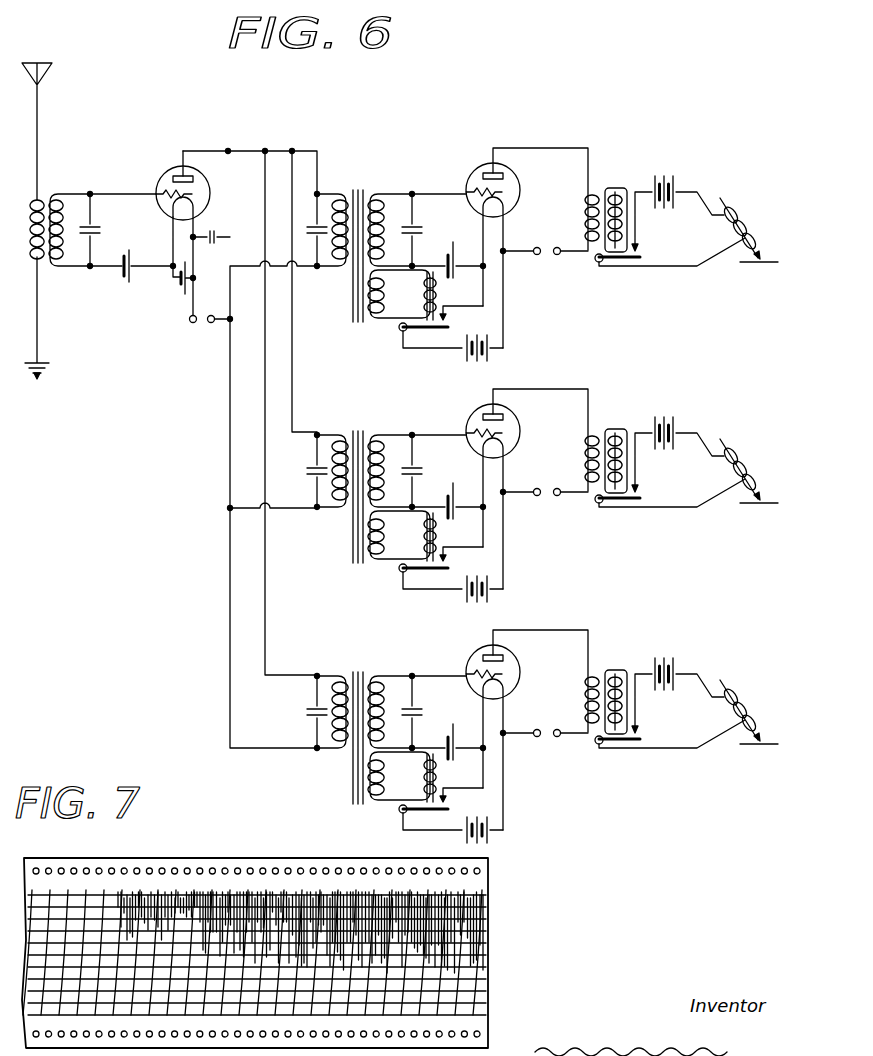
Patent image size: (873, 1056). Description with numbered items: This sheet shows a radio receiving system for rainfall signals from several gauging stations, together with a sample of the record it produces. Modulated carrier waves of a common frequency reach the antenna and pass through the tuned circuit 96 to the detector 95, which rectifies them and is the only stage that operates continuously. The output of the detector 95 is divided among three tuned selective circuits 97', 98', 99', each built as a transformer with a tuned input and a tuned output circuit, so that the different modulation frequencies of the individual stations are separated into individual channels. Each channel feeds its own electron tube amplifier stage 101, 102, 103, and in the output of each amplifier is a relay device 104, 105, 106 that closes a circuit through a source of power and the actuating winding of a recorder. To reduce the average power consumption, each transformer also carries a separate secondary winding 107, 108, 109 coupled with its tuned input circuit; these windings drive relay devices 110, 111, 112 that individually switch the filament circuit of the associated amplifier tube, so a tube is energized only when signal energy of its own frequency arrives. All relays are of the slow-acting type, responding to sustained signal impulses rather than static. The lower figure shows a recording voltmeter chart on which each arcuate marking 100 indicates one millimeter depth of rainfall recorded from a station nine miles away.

In FIG. 6, the detector circuit 95 is at (162, 168).
In FIG. 6, the tuned circuit 96 is at (77, 207).
In FIG. 6, the tuned selective circuit 97' is at (386, 244).
In FIG. 6, the tuned selective circuit 98' is at (386, 485).
In FIG. 6, the tuned selective circuit 99' is at (386, 726).
In FIG. 7, the arcuate marking 100 is at (478, 960).
In FIG. 6, the electron tube amplifier stage 101 is at (480, 169).
In FIG. 6, the electron tube amplifier stage 102 is at (517, 489).
In FIG. 6, the electron tube amplifier stage 103 is at (517, 730).
In FIG. 6, the relay device 104 is at (612, 186).
In FIG. 6, the relay device 105 is at (622, 442).
In FIG. 6, the relay device 106 is at (622, 683).
In FIG. 6, the separate secondary winding 107 is at (376, 320).
In FIG. 6, the separate secondary winding 108 is at (387, 552).
In FIG. 6, the separate secondary winding 109 is at (387, 793).
In FIG. 6, the relay device 110 is at (440, 299).
In FIG. 6, the relay device 111 is at (456, 537).
In FIG. 6, the relay device 112 is at (456, 778).